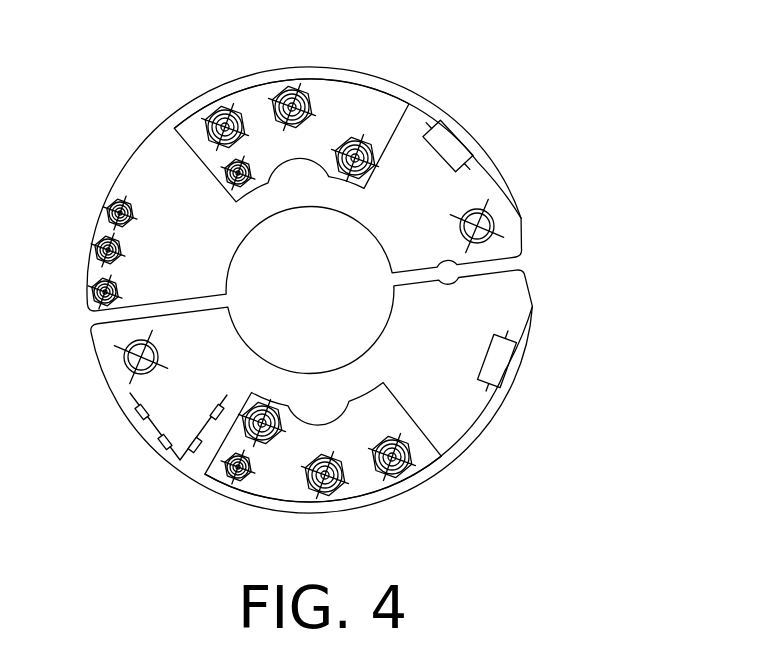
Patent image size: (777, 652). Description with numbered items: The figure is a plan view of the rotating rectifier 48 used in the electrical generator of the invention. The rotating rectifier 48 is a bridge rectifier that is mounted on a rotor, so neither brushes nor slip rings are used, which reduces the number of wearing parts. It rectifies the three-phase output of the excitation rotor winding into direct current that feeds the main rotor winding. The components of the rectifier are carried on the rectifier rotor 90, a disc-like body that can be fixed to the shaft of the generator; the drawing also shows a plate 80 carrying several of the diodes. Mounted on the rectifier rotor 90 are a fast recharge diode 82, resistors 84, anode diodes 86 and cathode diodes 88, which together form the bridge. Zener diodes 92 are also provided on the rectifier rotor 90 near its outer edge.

The rotating rectifier 48 is at (521, 88).
The positive heat sink plate 80 is at (183, 149).
The fast recharge diode 82 is at (181, 462).
The resistors 84 is at (507, 365).
The anode diodes 86 is at (410, 463).
The cathode diodes 88 is at (212, 124).
The rectifier rotor 90 is at (505, 306).
The Zener diodes 92 is at (88, 267).